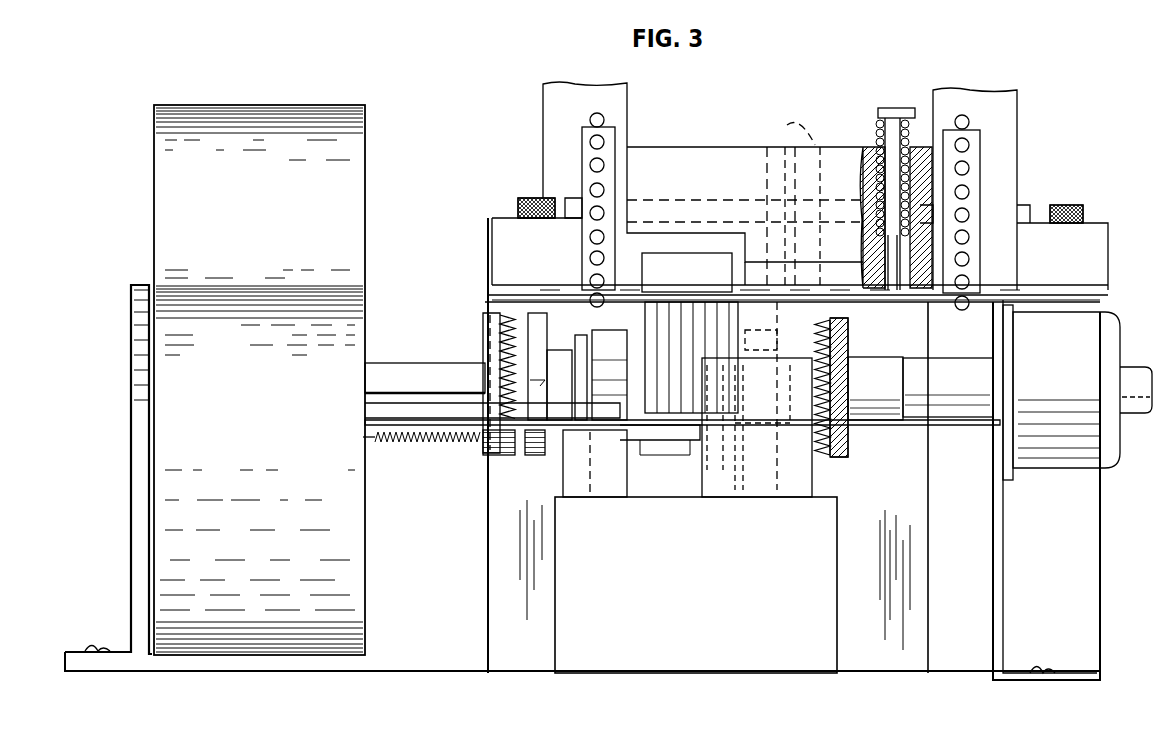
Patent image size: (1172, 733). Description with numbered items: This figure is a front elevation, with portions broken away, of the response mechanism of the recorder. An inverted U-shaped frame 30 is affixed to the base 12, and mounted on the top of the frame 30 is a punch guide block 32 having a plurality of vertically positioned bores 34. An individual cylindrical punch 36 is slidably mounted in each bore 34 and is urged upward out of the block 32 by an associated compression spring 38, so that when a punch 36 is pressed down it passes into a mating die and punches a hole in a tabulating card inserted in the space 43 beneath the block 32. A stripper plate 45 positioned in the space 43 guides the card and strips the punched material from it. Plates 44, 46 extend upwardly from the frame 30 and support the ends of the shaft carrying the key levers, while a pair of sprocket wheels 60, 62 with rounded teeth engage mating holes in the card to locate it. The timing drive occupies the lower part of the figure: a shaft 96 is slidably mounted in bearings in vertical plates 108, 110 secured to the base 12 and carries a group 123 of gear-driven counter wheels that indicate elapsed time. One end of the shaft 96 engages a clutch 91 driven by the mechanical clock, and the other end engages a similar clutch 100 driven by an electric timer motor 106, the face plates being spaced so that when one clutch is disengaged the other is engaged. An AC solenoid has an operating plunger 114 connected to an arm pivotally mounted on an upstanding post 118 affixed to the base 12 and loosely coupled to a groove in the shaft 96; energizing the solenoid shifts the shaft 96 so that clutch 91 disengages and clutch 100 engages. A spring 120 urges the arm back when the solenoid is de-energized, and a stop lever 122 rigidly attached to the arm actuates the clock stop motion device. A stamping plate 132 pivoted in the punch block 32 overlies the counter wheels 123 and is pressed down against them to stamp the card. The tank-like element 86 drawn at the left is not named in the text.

The base 12 is at (140, 581).
The inverted U-shaped frame 30 is at (848, 578).
The punch guide block 32 is at (665, 150).
The bores 34 is at (872, 148).
The cylindrical punch 36 is at (893, 108).
The compression spring 38 is at (920, 150).
The space 43 is at (855, 300).
The plate 44 is at (1003, 100).
The stripper plate 45 is at (568, 288).
The plate 46 is at (560, 101).
The sprocket wheel 60 is at (586, 143).
The sprocket wheel 62 is at (985, 150).
The tank 86 is at (363, 592).
The clutch 91 is at (478, 340).
The shaft 96 is at (555, 350).
The clutch 100 is at (855, 425).
The electric timer motor 106 is at (1040, 445).
The vertical plate 108 is at (614, 350).
The vertical plate 110 is at (767, 490).
The operating plunger 114 is at (668, 440).
The upstanding post 118 is at (567, 465).
The spring 120 is at (405, 440).
The stop lever 122 is at (447, 428).
The group of counter wheels 123 is at (662, 312).
The stamping plate 132 is at (646, 265).